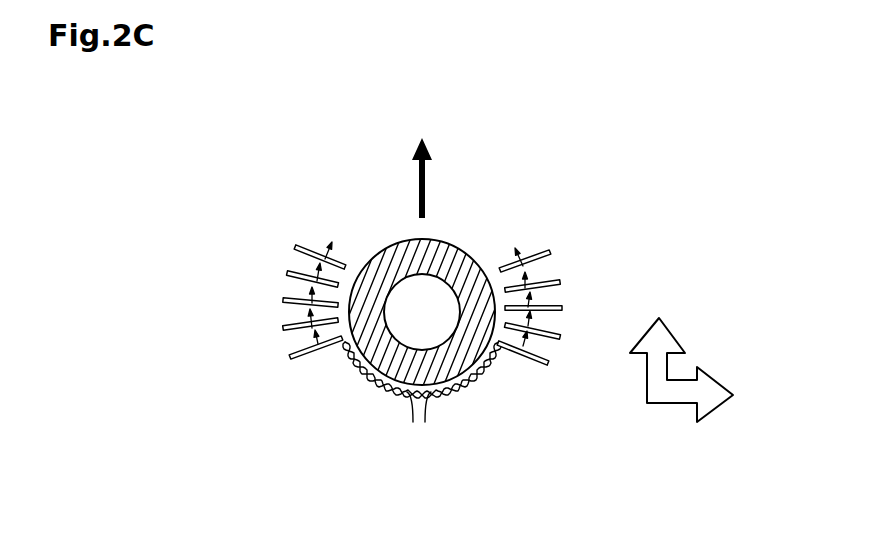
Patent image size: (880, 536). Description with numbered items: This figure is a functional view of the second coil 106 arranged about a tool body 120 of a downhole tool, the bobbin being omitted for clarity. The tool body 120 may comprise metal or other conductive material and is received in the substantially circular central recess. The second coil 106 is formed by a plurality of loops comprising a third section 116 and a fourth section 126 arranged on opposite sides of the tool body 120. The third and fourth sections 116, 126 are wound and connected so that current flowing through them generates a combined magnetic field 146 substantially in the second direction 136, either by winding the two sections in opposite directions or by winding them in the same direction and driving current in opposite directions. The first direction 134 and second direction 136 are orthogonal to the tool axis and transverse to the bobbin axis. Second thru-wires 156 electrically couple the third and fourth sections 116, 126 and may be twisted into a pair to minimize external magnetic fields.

The second coil 106 is at (298, 241).
The third section 116 is at (291, 355).
The tool body 120 is at (453, 360).
The fourth section 126 is at (536, 366).
The first direction 134 is at (708, 393).
The second direction 136 is at (665, 372).
The combined magnetic field 146 is at (420, 177).
The second thru-wires 156 is at (375, 388).